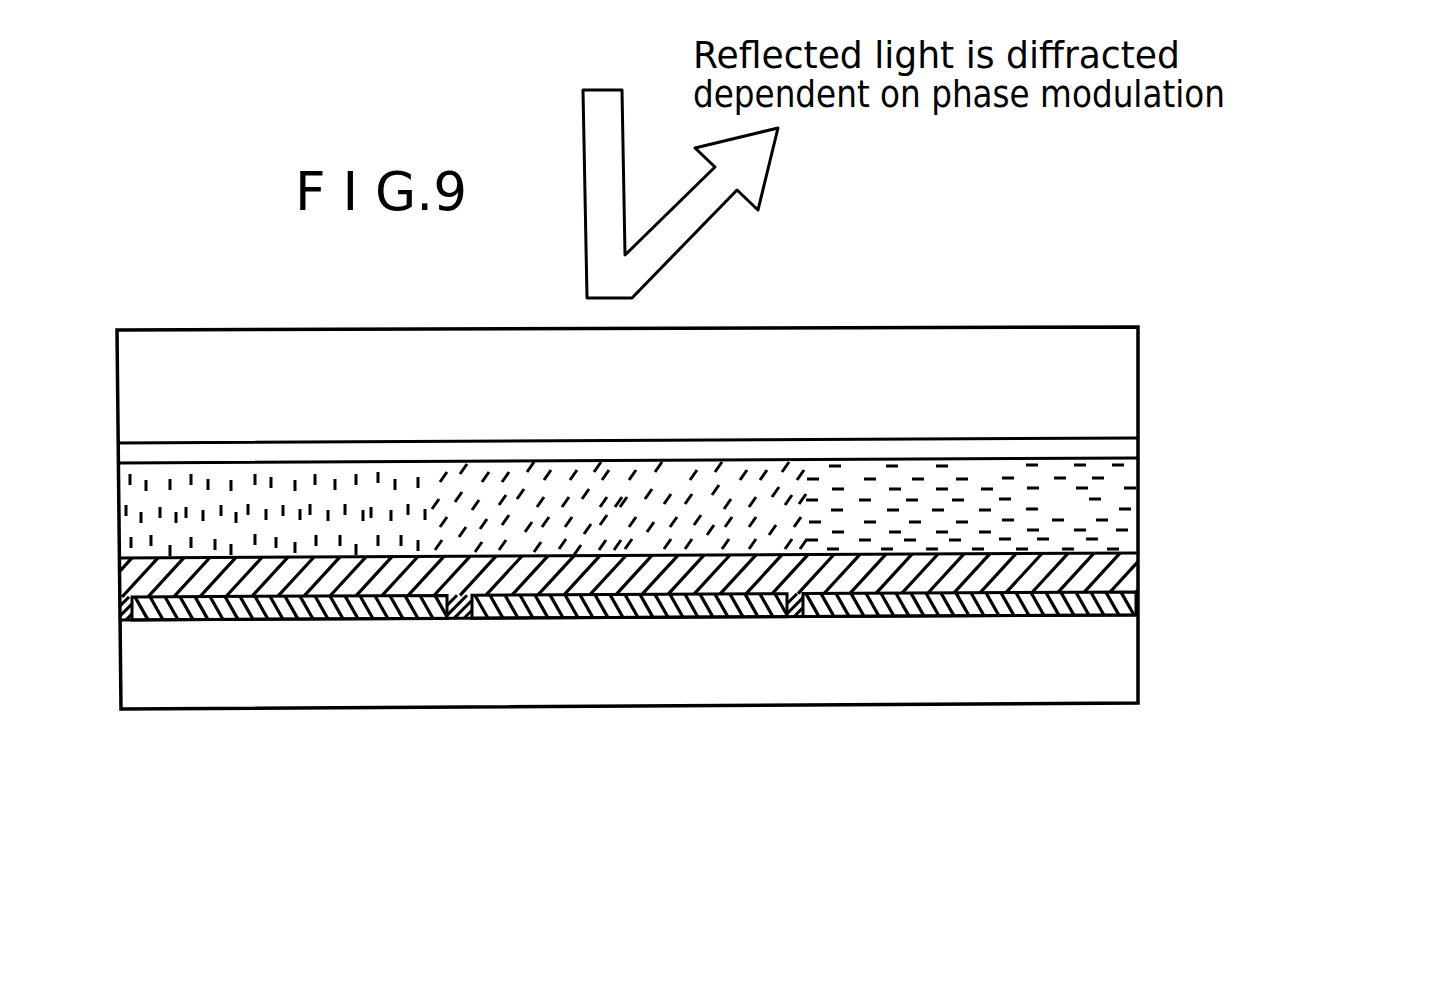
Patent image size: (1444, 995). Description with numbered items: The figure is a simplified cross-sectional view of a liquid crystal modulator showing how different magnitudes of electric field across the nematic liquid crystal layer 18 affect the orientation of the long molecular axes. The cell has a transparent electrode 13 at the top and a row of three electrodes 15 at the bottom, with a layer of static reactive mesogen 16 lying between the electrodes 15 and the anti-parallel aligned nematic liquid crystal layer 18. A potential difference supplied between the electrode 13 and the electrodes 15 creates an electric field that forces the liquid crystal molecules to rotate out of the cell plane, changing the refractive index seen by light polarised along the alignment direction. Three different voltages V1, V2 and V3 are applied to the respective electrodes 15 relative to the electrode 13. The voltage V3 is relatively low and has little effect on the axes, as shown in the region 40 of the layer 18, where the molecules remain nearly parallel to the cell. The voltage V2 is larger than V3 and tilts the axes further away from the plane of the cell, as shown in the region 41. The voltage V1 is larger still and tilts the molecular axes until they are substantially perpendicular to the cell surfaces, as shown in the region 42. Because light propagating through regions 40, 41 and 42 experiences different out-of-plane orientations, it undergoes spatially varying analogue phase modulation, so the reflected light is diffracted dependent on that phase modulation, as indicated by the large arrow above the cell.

The electrode 13 is at (1115, 447).
The electrodes 15 is at (348, 606).
The static reactive mesogen 16 is at (1110, 568).
The nematic liquid crystal layer 18 is at (779, 481).
The region of the layer 18 40 is at (966, 475).
The region of the layer 18 41 is at (665, 486).
The region of the layer 18 42 is at (353, 502).
The voltage V1 is at (253, 637).
The voltage V2 is at (562, 638).
The voltage V3 is at (855, 636).